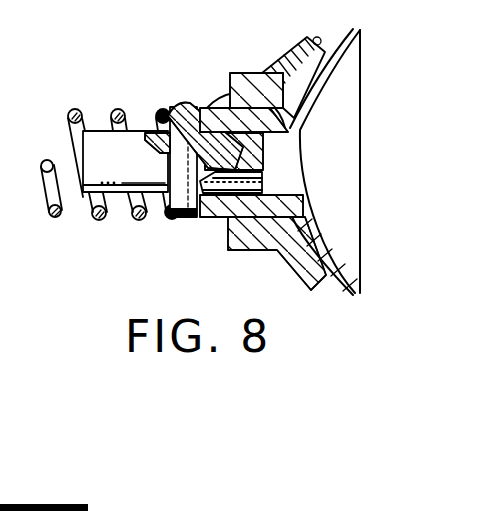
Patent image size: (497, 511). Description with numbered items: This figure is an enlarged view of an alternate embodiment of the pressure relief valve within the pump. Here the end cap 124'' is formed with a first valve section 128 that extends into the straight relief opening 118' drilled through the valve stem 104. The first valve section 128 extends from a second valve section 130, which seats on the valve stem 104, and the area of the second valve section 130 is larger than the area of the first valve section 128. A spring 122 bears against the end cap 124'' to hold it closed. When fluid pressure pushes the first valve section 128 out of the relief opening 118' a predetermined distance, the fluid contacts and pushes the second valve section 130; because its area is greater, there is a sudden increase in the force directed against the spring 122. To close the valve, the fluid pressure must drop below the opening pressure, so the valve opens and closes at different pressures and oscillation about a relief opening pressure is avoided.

The second valve section 130 is at (188, 108).
The valve stem 104 is at (213, 92).
The straight relief opening 118' is at (262, 71).
The spring 122 is at (108, 223).
The end cap 124'' is at (153, 198).
The first valve section 128 is at (218, 230).